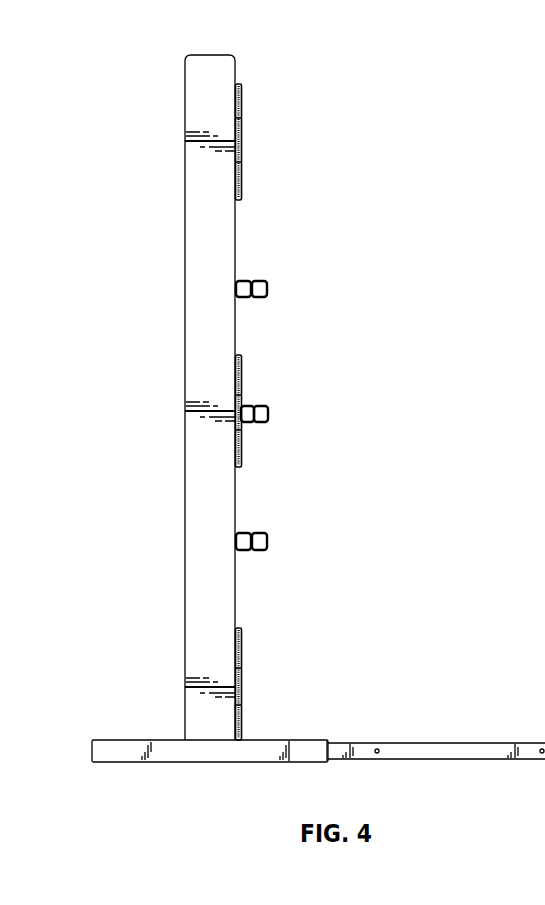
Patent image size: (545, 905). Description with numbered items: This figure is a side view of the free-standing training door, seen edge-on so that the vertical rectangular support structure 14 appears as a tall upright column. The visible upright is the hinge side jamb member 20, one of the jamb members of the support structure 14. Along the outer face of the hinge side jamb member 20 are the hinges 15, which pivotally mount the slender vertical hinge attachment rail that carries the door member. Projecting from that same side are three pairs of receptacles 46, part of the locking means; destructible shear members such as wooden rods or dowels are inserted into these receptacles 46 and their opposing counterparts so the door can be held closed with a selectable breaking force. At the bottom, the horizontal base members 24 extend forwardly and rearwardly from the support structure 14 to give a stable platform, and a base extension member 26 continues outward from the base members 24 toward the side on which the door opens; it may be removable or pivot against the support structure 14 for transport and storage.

The vertical rectangular support structure 14 is at (165, 373).
The hinge side jamb member 20 is at (200, 104).
The hinges 15 is at (242, 697).
The receptacles 46 is at (268, 290).
The horizontal base members 24 is at (193, 750).
The base extension member 26 is at (425, 752).